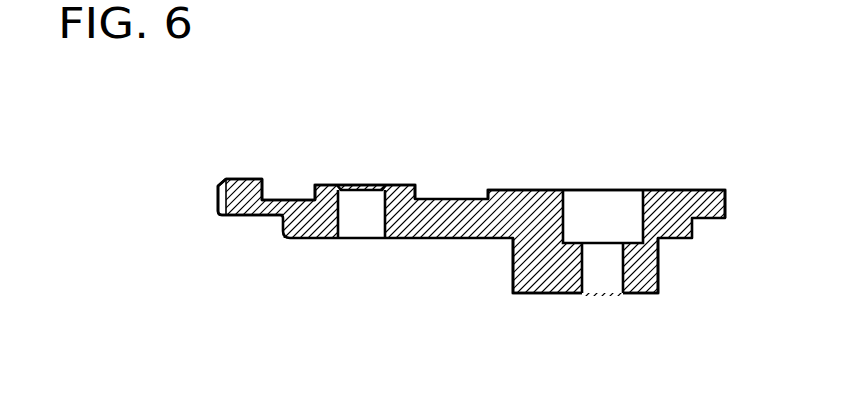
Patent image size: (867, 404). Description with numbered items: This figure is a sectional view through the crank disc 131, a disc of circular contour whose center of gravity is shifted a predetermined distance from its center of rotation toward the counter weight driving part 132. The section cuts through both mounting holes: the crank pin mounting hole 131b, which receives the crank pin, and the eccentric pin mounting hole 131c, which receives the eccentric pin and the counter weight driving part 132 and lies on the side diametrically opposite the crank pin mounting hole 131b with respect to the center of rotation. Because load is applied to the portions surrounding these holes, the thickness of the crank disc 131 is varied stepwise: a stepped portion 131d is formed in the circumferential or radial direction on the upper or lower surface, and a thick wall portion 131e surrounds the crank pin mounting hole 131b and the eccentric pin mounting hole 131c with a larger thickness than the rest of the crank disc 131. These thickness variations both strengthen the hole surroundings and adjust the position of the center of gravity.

The crank disc 131 is at (633, 183).
The crank pin mounting hole 131b is at (358, 230).
The eccentric pin mounting hole 131c is at (603, 282).
The stepped portion 131d is at (285, 198).
The thick wall portion 131e is at (393, 186).
The counter weight driving part 132 is at (510, 268).